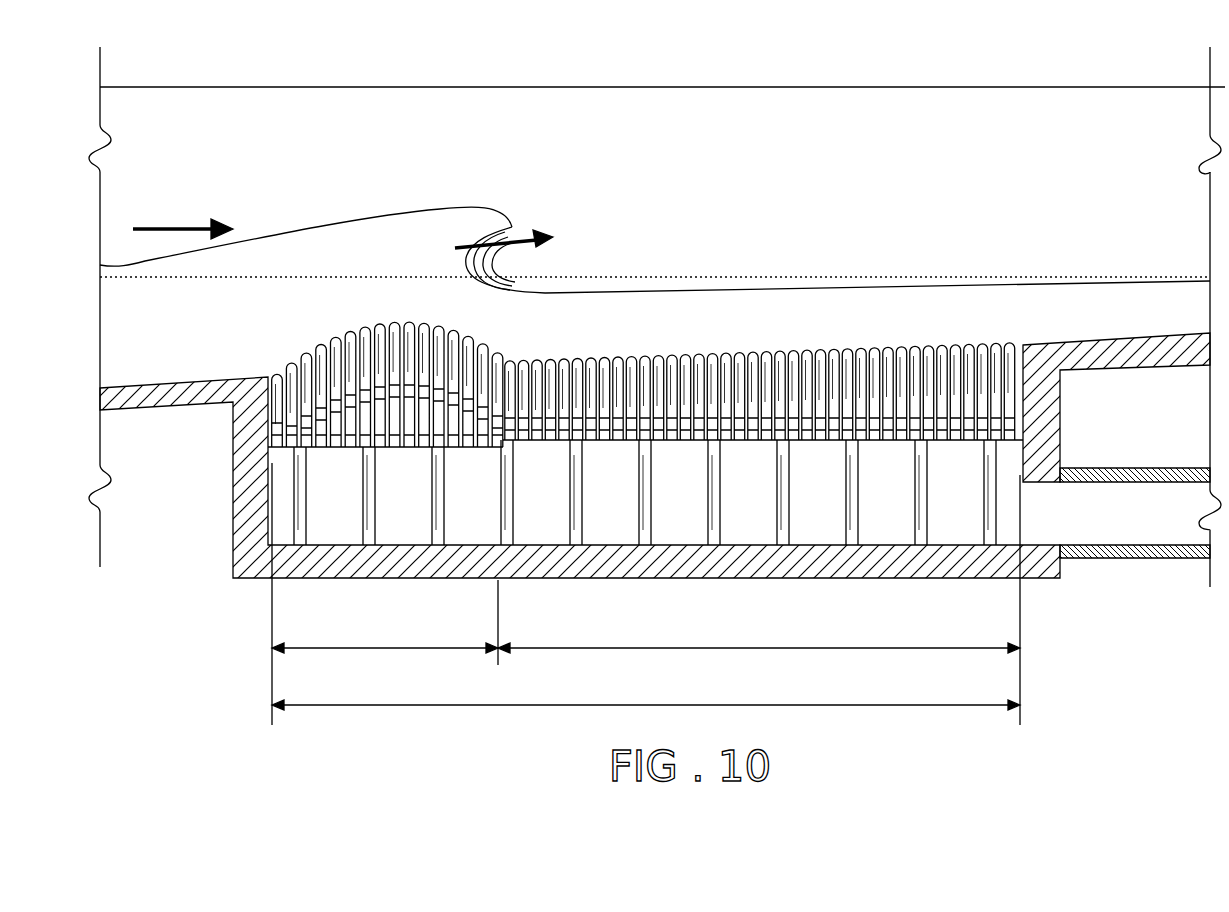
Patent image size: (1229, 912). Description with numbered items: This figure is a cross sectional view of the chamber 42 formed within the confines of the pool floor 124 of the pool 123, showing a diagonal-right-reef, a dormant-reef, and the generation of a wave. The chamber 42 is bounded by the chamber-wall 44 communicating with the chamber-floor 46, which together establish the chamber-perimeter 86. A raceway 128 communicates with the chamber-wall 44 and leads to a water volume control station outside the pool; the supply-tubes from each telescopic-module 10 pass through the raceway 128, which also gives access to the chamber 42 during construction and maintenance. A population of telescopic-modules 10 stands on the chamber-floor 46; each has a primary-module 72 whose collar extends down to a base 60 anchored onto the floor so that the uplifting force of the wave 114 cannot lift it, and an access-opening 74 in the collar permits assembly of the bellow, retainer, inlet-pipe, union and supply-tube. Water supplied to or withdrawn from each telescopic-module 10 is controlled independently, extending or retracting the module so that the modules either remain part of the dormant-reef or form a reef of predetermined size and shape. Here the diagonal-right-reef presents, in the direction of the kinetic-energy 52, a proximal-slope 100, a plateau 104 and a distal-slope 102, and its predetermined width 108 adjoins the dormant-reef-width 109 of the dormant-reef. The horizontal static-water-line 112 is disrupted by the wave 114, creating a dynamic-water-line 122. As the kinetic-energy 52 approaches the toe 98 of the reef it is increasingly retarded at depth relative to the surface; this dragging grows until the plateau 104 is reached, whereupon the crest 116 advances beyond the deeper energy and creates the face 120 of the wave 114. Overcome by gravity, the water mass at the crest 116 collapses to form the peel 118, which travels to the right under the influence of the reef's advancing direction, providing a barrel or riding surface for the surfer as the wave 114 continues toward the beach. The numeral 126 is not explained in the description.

The telescopic-module 10 is at (617, 390).
The chamber 42 is at (281, 488).
The chamber-wall 44 is at (419, 495).
The chamber-floor 46 is at (533, 543).
The kinetic-energy 52 is at (163, 228).
The base 60 is at (587, 542).
The primary-module 72 is at (728, 455).
The access-opening 74 is at (894, 440).
The chamber-perimeter 86 is at (578, 705).
The toe 98 is at (268, 372).
The proximal-slope 100 is at (336, 337).
The distal-slope 102 is at (487, 331).
The plateau 104 is at (416, 311).
The predetermined width 108 is at (372, 648).
The dormant-reef-width 109 is at (742, 648).
The static-water-line 112 is at (775, 286).
The wave 114 is at (366, 214).
The crest 116 is at (473, 212).
The peel 118 is at (536, 232).
The face 120 is at (493, 256).
The dynamic-water-line 122 is at (845, 290).
The pool 123 is at (732, 116).
The pool floor 124 is at (168, 386).
The cavity 126 is at (985, 168).
The raceway 128 is at (1123, 528).